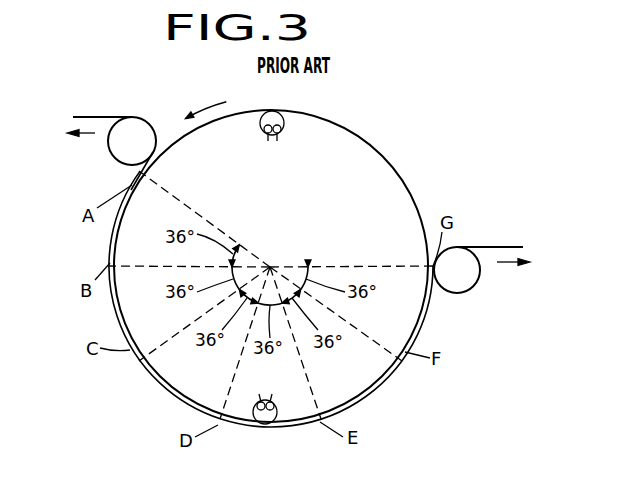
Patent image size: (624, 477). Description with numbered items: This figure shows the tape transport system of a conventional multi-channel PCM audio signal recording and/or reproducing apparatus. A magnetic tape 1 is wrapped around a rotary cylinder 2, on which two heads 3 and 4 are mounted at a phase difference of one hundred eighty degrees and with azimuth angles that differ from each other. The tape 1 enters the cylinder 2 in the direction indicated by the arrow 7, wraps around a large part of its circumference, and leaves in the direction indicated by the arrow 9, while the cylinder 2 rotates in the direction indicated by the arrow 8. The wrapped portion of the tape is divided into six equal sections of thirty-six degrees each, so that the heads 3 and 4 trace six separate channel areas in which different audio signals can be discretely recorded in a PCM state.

The magnetic tape 1 is at (486, 247).
The rotary cylinder 2 is at (413, 204).
The head 3 is at (283, 130).
The head 4 is at (278, 402).
The belt entry direction 7 is at (500, 268).
The drum rotation direction 8 is at (190, 116).
The exit roller 9 is at (95, 135).